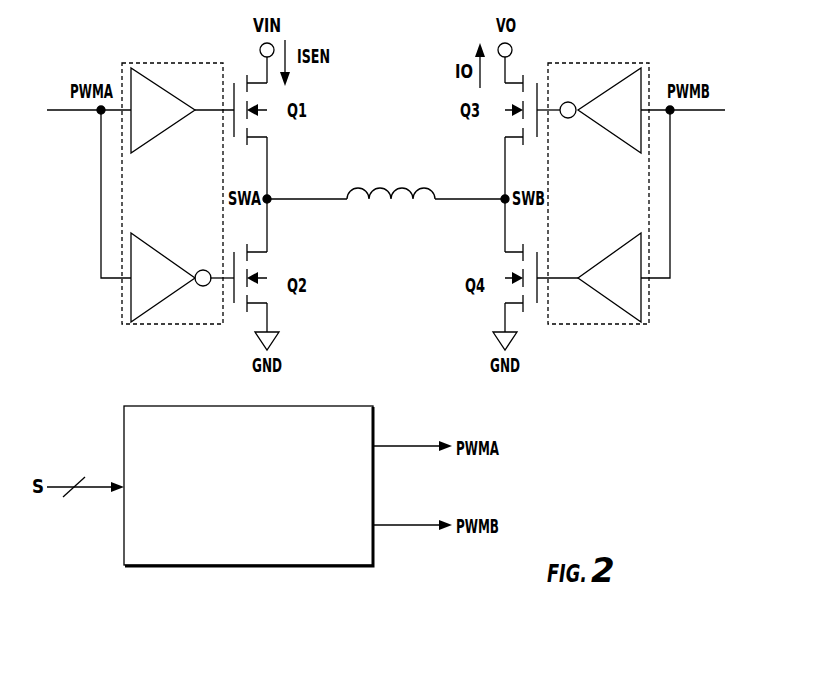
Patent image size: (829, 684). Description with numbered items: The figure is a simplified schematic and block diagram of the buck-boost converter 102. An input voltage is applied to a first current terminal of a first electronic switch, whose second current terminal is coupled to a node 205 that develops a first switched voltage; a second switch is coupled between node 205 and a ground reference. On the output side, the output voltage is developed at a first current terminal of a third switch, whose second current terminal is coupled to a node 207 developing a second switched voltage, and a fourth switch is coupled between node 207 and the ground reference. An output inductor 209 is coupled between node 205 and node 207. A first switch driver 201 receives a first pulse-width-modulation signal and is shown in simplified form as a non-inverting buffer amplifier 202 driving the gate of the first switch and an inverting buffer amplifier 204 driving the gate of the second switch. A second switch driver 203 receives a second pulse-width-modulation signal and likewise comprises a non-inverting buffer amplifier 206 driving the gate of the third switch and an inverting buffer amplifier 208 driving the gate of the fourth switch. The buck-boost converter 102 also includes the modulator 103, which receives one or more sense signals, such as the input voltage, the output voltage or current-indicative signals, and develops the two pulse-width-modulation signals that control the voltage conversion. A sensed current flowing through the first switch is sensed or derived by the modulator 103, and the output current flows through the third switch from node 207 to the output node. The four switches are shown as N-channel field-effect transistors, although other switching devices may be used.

The buck-boost converter 102 is at (600, 495).
The modulator 103 is at (262, 506).
The first switch driver 201 is at (189, 376).
The non-inverting buffer amplifier 202 is at (165, 121).
The second switch driver 203 is at (615, 376).
The inverting buffer amplifier 204 is at (165, 289).
The node 205 is at (268, 197).
The non-inverting buffer amplifier 206 is at (626, 121).
The node 207 is at (504, 197).
The inverting buffer amplifier 208 is at (626, 289).
The output inductor 209 is at (391, 200).